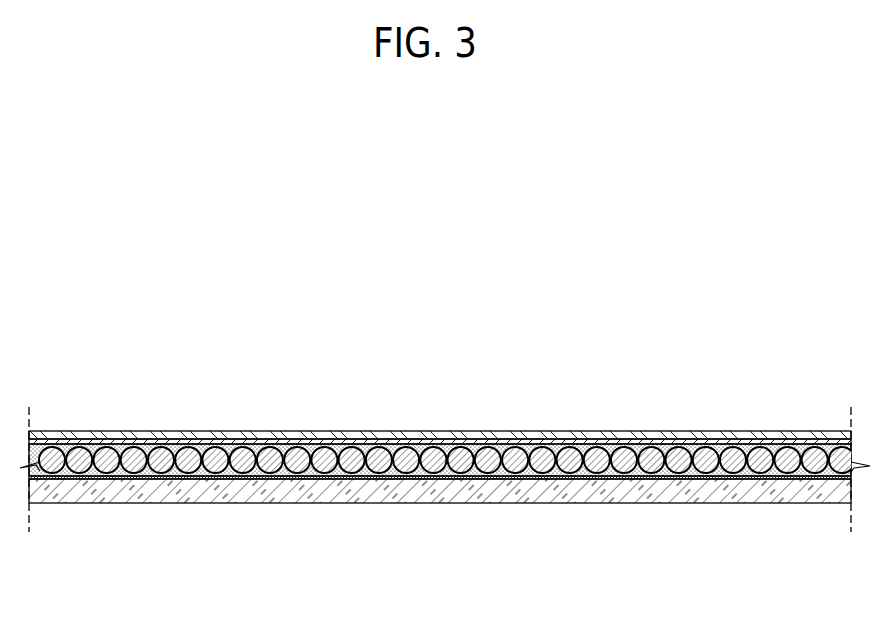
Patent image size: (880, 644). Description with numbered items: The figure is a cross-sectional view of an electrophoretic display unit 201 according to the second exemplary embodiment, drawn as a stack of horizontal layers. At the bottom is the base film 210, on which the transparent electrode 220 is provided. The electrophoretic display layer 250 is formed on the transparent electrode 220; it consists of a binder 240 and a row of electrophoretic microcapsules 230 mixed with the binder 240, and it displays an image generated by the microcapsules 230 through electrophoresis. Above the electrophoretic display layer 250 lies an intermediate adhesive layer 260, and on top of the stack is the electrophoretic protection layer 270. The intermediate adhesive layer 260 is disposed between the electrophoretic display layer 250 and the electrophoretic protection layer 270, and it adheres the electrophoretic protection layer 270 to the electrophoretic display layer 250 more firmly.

The electrophoretic display unit 201 is at (100, 418).
The base film 210 is at (255, 492).
The transparent electrode 220 is at (320, 479).
The electrophoretic microcapsule 230 is at (413, 475).
The binder 240 is at (453, 475).
The electrophoretic display layer 250 is at (442, 523).
The intermediate adhesive layer 260 is at (510, 443).
The electrophoretic protection layer 270 is at (582, 435).